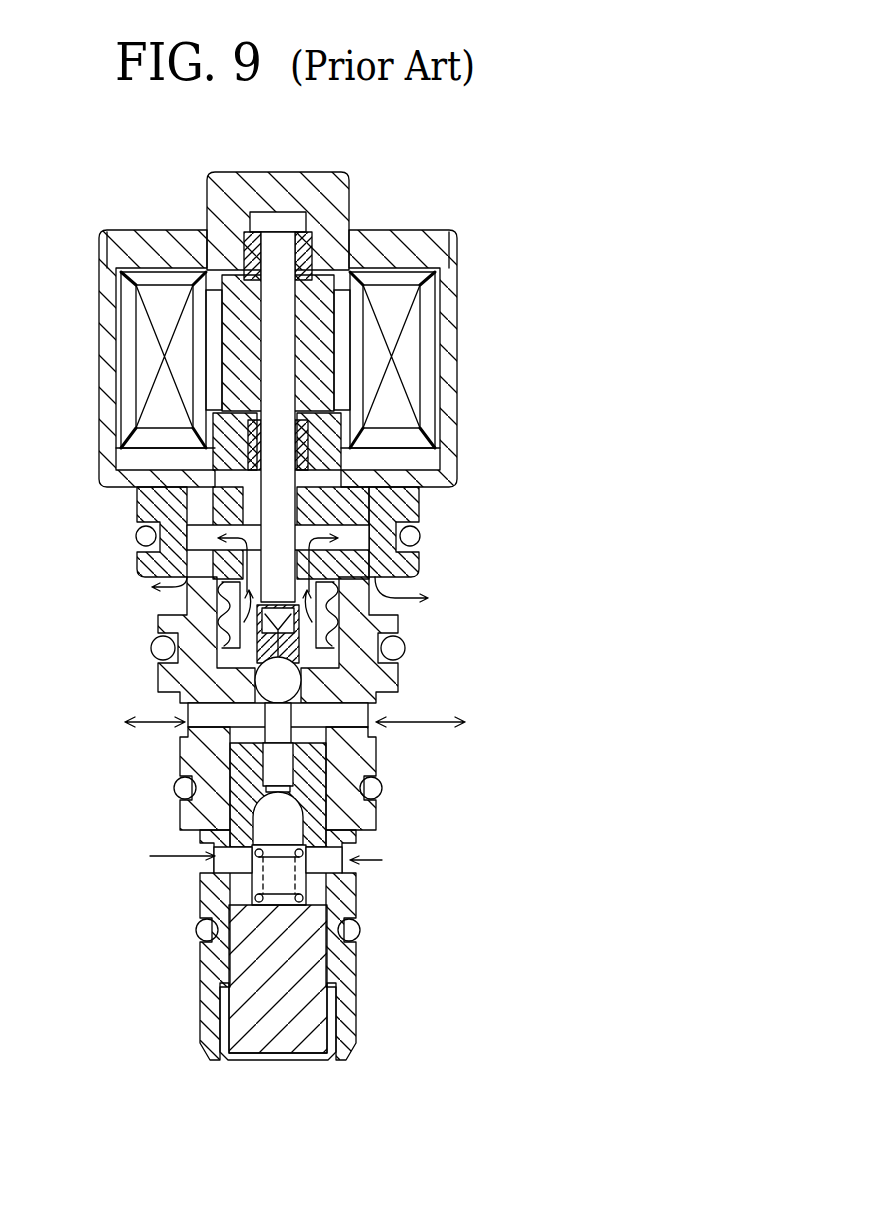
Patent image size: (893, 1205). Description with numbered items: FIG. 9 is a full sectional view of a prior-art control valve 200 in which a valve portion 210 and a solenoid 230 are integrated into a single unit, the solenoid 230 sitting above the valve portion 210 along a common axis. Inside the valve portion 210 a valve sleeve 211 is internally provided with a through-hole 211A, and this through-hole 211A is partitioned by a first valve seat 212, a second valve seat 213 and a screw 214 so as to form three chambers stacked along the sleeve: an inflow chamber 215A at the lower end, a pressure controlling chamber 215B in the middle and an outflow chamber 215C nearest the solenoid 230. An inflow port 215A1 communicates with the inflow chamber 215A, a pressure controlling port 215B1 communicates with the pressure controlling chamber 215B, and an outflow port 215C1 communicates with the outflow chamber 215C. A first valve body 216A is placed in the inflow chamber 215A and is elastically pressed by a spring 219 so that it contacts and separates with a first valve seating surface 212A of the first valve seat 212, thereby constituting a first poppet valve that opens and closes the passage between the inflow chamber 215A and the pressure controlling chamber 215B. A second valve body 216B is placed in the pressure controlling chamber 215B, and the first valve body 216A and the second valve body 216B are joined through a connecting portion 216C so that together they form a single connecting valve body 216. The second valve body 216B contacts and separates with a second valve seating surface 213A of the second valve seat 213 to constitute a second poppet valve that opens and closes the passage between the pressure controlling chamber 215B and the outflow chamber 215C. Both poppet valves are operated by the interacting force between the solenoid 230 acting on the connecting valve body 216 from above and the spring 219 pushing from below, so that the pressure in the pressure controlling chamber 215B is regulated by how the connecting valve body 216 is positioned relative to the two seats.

The control valve 200 is at (321, 615).
The solenoid 230 is at (472, 331).
The valve portion 210 is at (282, 773).
The outflow chamber 215C is at (305, 503).
The outflow port 215C1 is at (178, 502).
The pressure controlling chamber 215B is at (345, 698).
The pressure controlling port 215B1 is at (345, 725).
The inflow chamber 215A is at (320, 885).
The inflow port 215A1 is at (340, 862).
The second valve seat 213 is at (305, 602).
The second valve seating surface 213A is at (262, 670).
The connecting valve body 216 is at (215, 773).
The first valve body 216A is at (247, 770).
The second valve body 216B is at (250, 692).
The connecting portion 216C is at (270, 718).
The valve sleeve 211 is at (350, 790).
The through-hole 211A is at (315, 775).
The first valve seat 212 is at (280, 820).
The first valve seating surface 212A is at (262, 850).
The spring 219 is at (252, 885).
The screw 214 is at (280, 997).